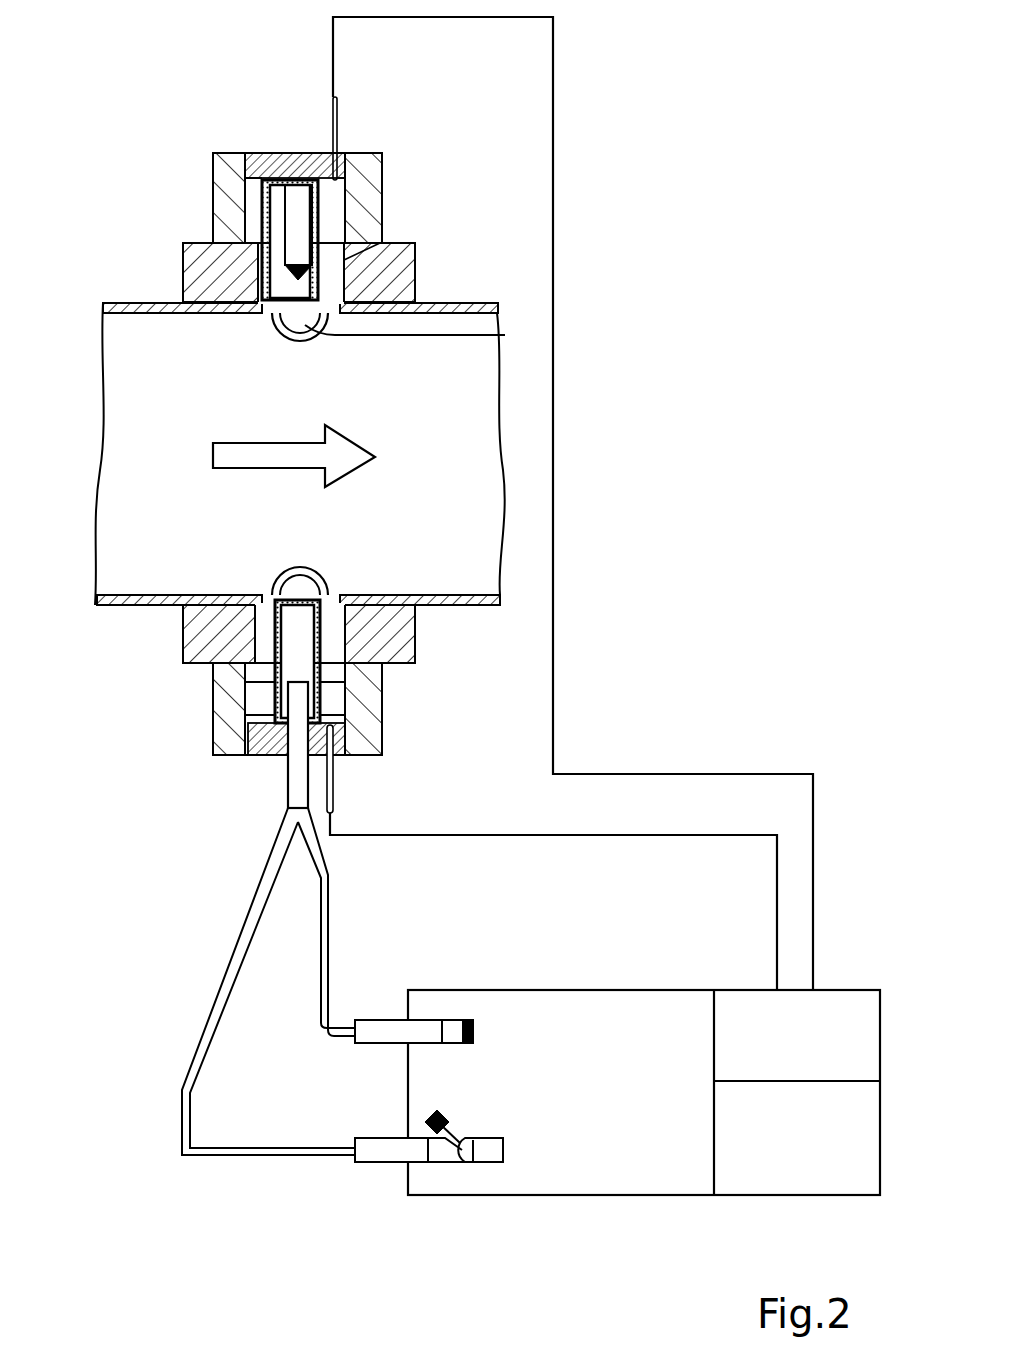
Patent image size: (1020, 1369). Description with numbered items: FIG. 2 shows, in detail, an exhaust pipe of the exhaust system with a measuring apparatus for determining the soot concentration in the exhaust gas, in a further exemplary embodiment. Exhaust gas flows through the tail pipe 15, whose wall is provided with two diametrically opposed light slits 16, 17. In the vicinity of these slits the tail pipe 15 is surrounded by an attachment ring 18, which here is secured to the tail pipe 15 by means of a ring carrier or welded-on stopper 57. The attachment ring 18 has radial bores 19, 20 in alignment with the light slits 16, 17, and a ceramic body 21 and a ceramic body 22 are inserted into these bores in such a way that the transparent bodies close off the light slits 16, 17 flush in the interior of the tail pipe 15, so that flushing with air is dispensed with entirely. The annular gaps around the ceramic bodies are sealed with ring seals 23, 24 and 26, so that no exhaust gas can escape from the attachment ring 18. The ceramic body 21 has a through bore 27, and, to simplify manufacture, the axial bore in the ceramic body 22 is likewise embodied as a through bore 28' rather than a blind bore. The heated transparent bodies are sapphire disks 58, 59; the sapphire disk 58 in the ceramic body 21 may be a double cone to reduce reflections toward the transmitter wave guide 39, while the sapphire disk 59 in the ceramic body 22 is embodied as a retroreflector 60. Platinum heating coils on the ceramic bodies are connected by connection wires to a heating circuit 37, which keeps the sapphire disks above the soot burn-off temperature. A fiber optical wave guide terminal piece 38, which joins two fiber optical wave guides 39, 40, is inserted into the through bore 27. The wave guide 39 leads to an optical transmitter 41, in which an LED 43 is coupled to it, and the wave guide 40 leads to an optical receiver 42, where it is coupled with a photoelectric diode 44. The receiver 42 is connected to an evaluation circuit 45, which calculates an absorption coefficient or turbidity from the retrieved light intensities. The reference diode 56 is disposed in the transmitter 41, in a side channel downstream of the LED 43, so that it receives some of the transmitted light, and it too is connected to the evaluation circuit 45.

The tail pipe 15 is at (395, 410).
The light slit 16 is at (313, 585).
The light slit 17 is at (505, 335).
The attachment ring 18 is at (240, 692).
The radial bore 19 is at (385, 680).
The radial bore 20 is at (262, 270).
The ceramic body 21 is at (247, 720).
The ceramic body 22 is at (353, 200).
The ring seal 23 is at (350, 690).
The ring seal 24 is at (212, 747).
The ring seal 26 is at (378, 153).
The through bore 27 is at (293, 665).
The through bore 28' is at (448, 168).
The heating circuit 37 is at (736, 1001).
The fiber optical wave guide terminal piece 38 is at (300, 777).
The fiber optical wave guide 39 is at (232, 972).
The fiber optical wave guide 40 is at (323, 913).
The optical transmitter 41 is at (457, 1163).
The optical receiver 42 is at (462, 1013).
The LED 43 is at (490, 1150).
The photoelectric diode 44 is at (473, 1035).
The evaluation circuit 45 is at (783, 1180).
The reference diode 56 is at (427, 1118).
The welded-on stopper 57 is at (383, 625).
The sapphire disk 58 is at (330, 597).
The sapphire disk 59 is at (410, 288).
The retroreflector 60 is at (417, 260).